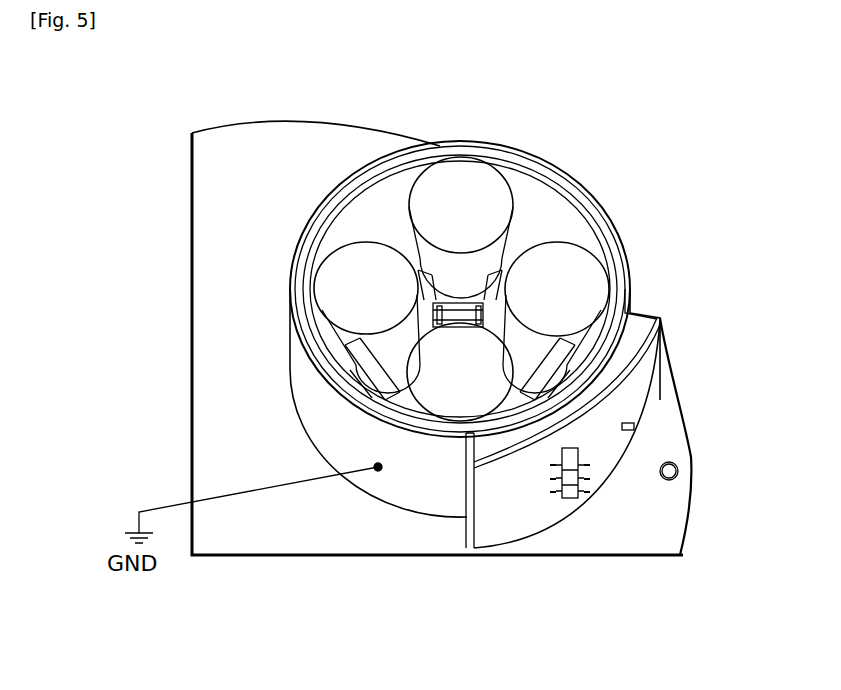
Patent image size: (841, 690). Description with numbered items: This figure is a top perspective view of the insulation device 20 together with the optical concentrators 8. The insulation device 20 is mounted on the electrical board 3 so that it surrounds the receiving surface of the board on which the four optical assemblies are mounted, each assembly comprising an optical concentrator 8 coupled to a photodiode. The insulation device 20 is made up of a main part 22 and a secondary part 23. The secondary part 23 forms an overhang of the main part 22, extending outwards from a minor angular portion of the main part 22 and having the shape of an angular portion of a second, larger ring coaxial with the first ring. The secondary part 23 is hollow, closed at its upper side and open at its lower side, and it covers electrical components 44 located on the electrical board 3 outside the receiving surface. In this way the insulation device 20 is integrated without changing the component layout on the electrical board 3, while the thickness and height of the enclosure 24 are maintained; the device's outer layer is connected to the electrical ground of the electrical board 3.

The electrical board 3 is at (251, 556).
The optical concentrator 8 is at (420, 203).
The insulation device 20 is at (580, 200).
The main part 22 is at (622, 212).
The secondary part 23 is at (646, 391).
The enclosure 24 is at (490, 157).
The electrical components 44 is at (628, 432).